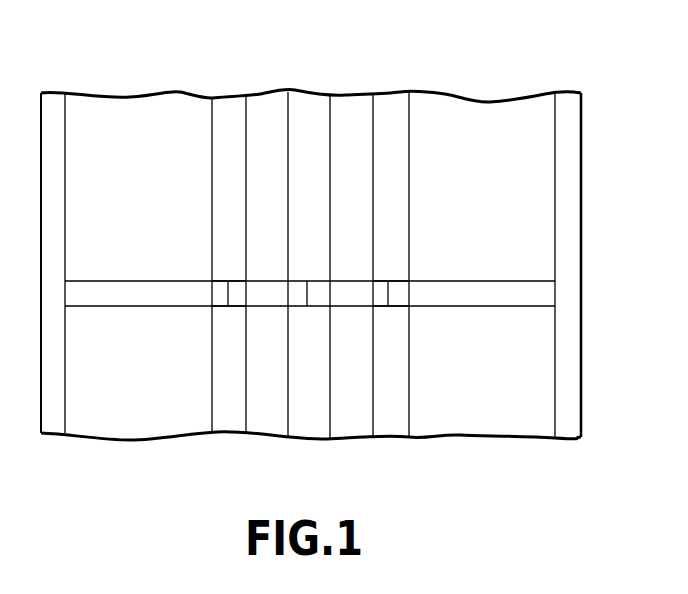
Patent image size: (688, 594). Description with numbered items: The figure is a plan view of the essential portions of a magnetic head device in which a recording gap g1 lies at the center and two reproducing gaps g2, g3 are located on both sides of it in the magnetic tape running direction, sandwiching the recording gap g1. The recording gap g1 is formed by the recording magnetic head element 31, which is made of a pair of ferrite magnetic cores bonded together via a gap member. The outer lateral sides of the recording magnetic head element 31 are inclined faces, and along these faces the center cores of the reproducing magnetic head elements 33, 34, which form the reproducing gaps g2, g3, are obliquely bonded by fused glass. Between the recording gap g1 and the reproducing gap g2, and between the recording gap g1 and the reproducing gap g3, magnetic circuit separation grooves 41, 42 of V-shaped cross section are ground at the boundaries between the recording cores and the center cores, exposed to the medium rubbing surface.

The recording magnetic head element 31 is at (319, 308).
The reproducing magnetic head element 33 is at (221, 306).
The reproducing magnetic head element 34 is at (397, 306).
The magnetic circuit separation groove 41 is at (250, 385).
The magnetic circuit separation groove 42 is at (375, 398).
The recording gap g1 is at (303, 295).
The reproducing gap g2 is at (222, 295).
The reproducing gap g3 is at (395, 295).